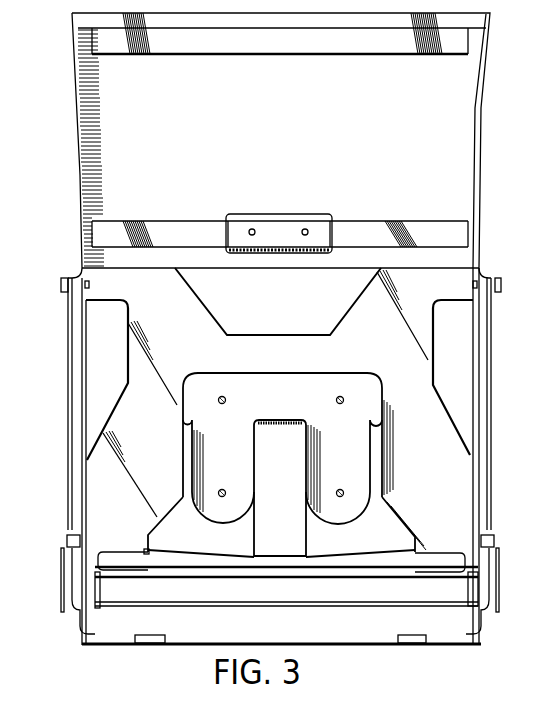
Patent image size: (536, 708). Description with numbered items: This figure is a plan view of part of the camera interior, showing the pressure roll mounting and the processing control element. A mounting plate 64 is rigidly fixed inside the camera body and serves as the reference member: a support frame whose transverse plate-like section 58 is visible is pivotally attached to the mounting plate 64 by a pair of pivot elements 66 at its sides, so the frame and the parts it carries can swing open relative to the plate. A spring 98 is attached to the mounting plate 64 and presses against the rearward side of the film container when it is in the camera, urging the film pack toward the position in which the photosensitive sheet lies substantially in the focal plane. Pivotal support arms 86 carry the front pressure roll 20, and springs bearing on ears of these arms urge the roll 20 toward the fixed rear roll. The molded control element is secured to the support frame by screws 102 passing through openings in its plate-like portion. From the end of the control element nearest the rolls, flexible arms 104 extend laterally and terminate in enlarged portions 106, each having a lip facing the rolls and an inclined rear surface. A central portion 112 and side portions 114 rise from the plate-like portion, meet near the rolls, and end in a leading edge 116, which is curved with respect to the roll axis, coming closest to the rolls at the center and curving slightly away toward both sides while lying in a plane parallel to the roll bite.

The pressure roll 20 is at (306, 588).
The transverse plate-like section 58 is at (200, 327).
The mounting plate 64 is at (257, 179).
The pivot elements 66 is at (62, 287).
The support arms 86 is at (90, 373).
The spring 98 is at (370, 227).
The screws 102 is at (338, 489).
The flexible arms 104 is at (217, 558).
The enlarged portions 106 is at (117, 558).
The central portion 112 is at (293, 517).
The side portions 114 is at (178, 510).
The leading edge 116 is at (293, 540).